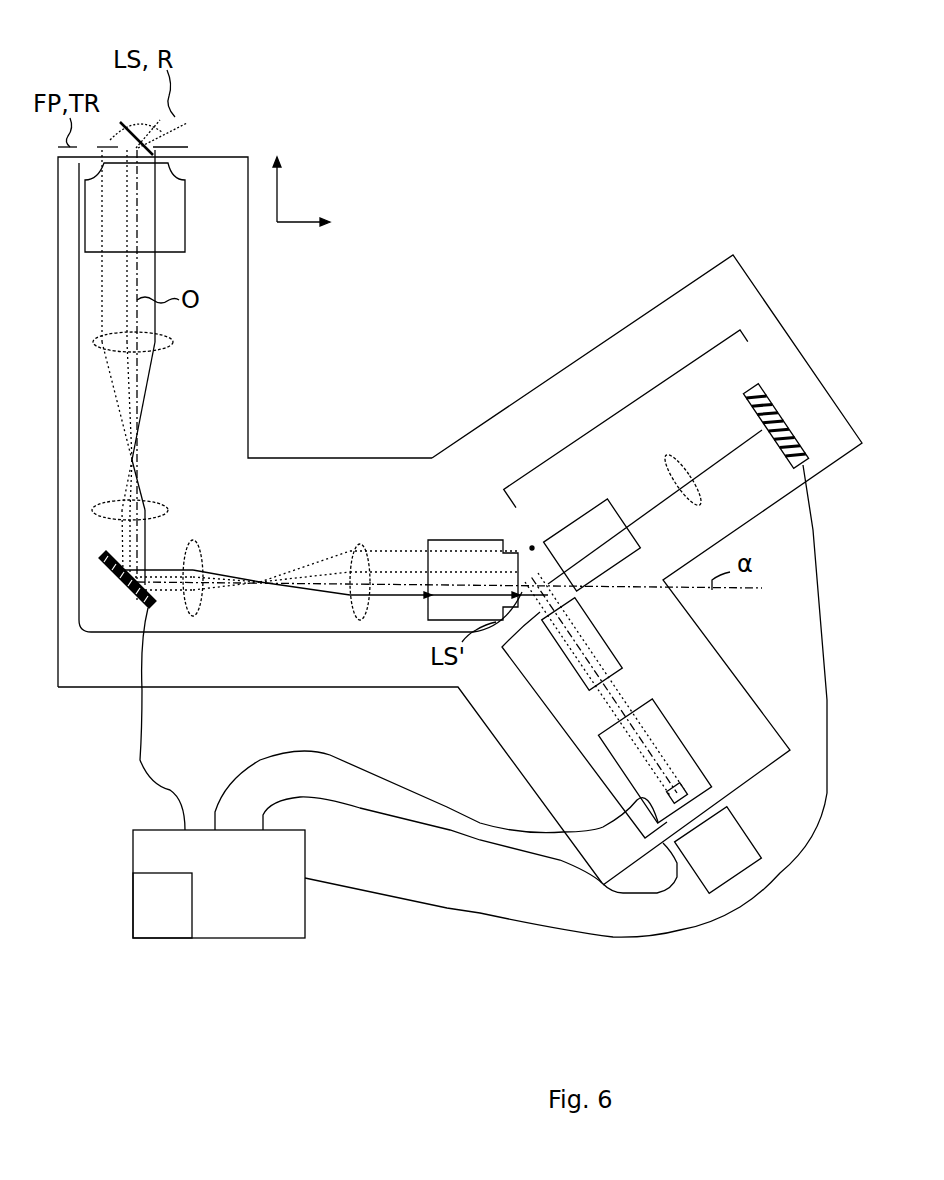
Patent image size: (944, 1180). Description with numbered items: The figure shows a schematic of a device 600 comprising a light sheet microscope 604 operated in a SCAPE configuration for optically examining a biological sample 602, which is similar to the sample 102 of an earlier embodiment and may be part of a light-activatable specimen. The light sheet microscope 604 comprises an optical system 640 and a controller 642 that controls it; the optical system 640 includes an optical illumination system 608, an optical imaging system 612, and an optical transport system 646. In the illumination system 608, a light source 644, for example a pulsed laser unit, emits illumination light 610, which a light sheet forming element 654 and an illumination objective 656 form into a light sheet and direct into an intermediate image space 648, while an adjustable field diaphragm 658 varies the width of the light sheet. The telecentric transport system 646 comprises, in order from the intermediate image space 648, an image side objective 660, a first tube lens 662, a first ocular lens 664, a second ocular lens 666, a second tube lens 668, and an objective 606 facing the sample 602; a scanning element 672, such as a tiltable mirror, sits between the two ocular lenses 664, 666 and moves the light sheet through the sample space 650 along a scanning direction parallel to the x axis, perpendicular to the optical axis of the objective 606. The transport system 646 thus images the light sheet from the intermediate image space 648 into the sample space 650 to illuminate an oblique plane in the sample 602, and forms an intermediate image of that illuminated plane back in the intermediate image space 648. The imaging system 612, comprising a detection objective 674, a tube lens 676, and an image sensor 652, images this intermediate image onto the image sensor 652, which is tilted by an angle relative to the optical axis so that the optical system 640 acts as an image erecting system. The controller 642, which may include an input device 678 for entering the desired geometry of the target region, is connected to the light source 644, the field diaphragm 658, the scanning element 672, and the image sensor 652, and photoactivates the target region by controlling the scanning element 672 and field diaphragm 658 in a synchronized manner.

The device 600 is at (549, 89).
The biological sample 602 is at (173, 140).
The light sheet microscope 604 is at (598, 188).
The objective 606 is at (185, 243).
The optical illumination system 608 is at (580, 757).
The illumination light 610 is at (702, 810).
The optical imaging system 612 is at (604, 416).
The optical system 640 is at (358, 458).
The controller 642 is at (275, 894).
The light source 644 is at (737, 831).
The optical transport system 646 is at (287, 628).
The intermediate image space 648 is at (532, 543).
The sample space 650 is at (190, 111).
The image sensor 652 is at (786, 392).
The light sheet forming element 654 is at (690, 783).
The illumination objective 656 is at (633, 640).
The adjustable field diaphragm 658 is at (685, 752).
The image side objective 660 is at (445, 540).
The first tube lens 662 is at (360, 545).
The first ocular lens 664 is at (203, 553).
The second ocular lens 666 is at (168, 507).
The second tube lens 668 is at (173, 342).
The scanning element 672 is at (130, 592).
The detection objective 674 is at (613, 568).
The tube lens 676 is at (703, 503).
The input device 678 is at (167, 927).
The sample 102 is at (278, 197).